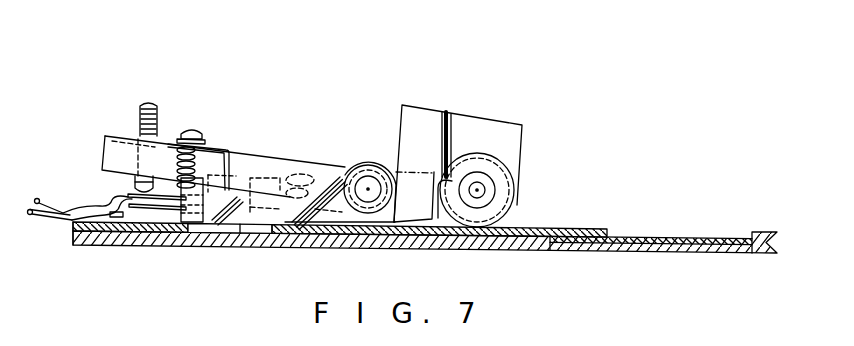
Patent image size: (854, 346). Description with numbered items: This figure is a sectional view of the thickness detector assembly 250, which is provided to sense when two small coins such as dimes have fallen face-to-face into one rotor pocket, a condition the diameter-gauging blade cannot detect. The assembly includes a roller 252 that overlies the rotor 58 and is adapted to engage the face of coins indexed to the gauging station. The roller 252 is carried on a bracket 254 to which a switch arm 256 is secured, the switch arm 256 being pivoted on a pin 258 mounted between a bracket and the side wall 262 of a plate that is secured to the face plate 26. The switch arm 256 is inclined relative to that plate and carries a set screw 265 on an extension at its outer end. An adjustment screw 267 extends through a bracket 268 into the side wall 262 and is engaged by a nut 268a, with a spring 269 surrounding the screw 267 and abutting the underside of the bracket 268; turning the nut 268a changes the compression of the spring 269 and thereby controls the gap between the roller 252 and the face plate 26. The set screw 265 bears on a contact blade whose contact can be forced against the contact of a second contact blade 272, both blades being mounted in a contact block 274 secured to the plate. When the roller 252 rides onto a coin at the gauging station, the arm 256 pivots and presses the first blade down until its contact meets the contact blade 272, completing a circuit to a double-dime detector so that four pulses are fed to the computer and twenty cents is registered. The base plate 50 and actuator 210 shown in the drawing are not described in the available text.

The thickness detector assembly 250 is at (385, 80).
The bracket 254 is at (460, 125).
The roller 252 is at (517, 187).
The pin 258 is at (368, 180).
The switch arm 256 is at (297, 163).
The lever arm 210 is at (125, 193).
The set screw 265 is at (160, 93).
The adjustment screw 267 is at (200, 155).
The bracket 268 is at (213, 150).
The nut 268a is at (182, 128).
The spring 269 is at (224, 146).
The face plate 26 is at (102, 246).
The contact blade 272 is at (130, 244).
The contact block 274 is at (230, 220).
The side wall 262 is at (306, 250).
The rotor 58 is at (540, 229).
The base plate 50 is at (660, 253).